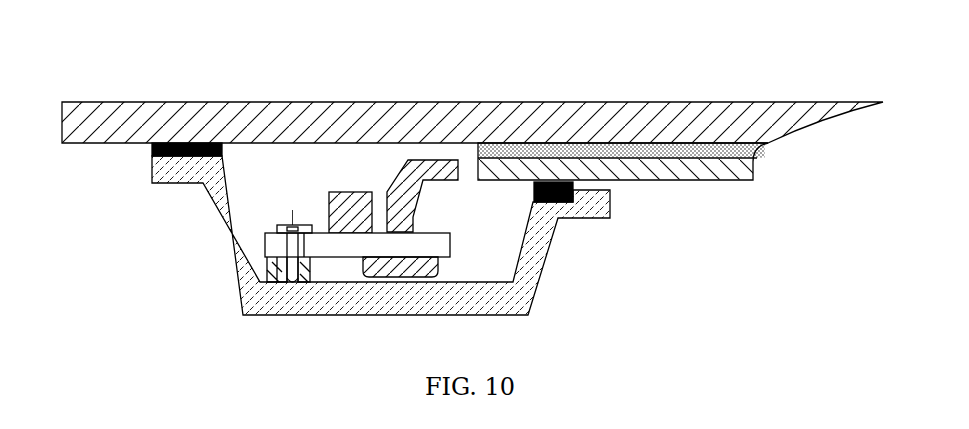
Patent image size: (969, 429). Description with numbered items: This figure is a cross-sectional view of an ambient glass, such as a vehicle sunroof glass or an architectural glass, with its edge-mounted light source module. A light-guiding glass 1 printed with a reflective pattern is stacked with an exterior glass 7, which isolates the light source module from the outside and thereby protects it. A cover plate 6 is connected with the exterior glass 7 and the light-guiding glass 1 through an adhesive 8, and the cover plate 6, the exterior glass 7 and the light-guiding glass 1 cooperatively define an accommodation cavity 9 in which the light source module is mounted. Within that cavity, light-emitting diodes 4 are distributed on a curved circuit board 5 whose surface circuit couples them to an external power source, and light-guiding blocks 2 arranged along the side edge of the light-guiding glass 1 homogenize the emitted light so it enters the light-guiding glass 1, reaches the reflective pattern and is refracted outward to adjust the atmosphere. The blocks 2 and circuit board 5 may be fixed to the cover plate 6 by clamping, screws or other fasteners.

The light-guiding glass 1 is at (656, 178).
The light-guiding block 2 is at (423, 158).
The light-emitting diode 4 is at (345, 190).
The curved circuit board 5 is at (359, 257).
The cover plate 6 is at (527, 306).
The exterior glass 7 is at (600, 102).
The adhesive 8 is at (154, 155).
The accommodation cavity 9 is at (477, 234).